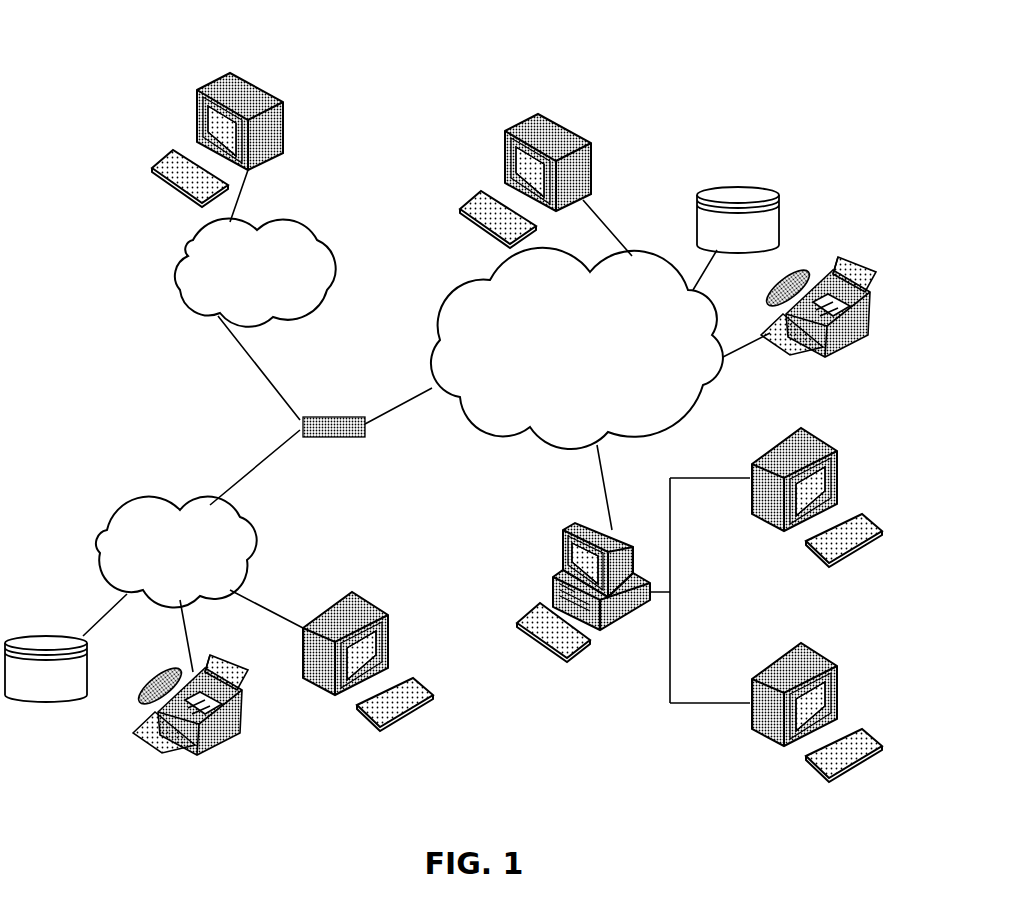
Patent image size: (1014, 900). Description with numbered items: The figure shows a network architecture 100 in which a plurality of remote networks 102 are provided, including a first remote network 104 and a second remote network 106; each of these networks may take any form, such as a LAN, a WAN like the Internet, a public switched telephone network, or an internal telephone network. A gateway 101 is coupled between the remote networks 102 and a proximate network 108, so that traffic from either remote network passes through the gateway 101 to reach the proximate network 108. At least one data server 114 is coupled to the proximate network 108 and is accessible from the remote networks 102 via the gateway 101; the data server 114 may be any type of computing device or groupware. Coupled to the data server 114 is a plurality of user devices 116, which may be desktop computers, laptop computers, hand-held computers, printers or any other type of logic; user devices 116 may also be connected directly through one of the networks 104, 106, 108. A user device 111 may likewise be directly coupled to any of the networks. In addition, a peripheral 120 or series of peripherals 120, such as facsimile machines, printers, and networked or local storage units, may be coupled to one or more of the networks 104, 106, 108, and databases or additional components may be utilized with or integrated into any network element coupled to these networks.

The architecture 100 is at (128, 50).
The gateway 101 is at (312, 417).
The remote networks 102 is at (148, 340).
The first remote network 104 is at (103, 528).
The second remote network 106 is at (322, 243).
The proximate network 108 is at (683, 417).
The user device 111 is at (592, 147).
The data server 114 is at (563, 545).
The user devices 116 is at (283, 110).
The peripheral 120 is at (50, 703).